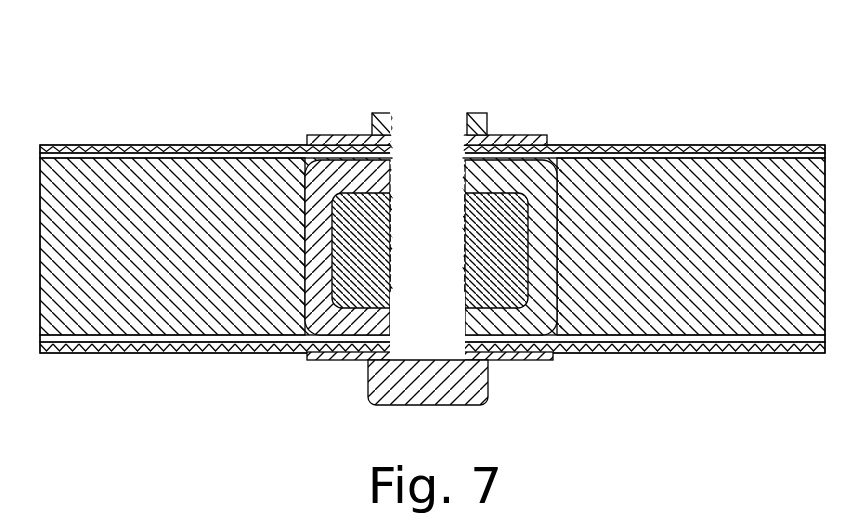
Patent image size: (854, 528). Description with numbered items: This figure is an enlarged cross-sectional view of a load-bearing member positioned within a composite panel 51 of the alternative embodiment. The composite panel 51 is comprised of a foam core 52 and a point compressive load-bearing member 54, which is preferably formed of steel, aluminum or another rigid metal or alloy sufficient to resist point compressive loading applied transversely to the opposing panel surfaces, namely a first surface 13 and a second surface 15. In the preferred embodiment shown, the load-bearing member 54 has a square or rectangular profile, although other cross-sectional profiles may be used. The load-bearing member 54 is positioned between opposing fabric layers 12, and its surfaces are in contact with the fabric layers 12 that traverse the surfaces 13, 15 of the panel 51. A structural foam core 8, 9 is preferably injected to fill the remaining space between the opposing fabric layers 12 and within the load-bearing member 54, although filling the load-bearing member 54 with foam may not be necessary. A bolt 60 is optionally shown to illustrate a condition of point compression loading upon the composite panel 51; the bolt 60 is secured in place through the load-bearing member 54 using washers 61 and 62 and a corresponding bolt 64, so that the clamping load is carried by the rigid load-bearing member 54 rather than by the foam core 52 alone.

The structural foam core 8 is at (365, 255).
The structural foam core 9 is at (170, 255).
The fabric layer 12 is at (789, 146).
The first surface 13 is at (82, 146).
The second surface 15 is at (777, 355).
The composite panel 51 is at (709, 84).
The foam core 52 is at (677, 250).
The load-bearing member 54 is at (330, 353).
The bolt 60 is at (408, 72).
The washer 61 is at (560, 360).
The washer 62 is at (317, 136).
The bolt 64 is at (479, 113).